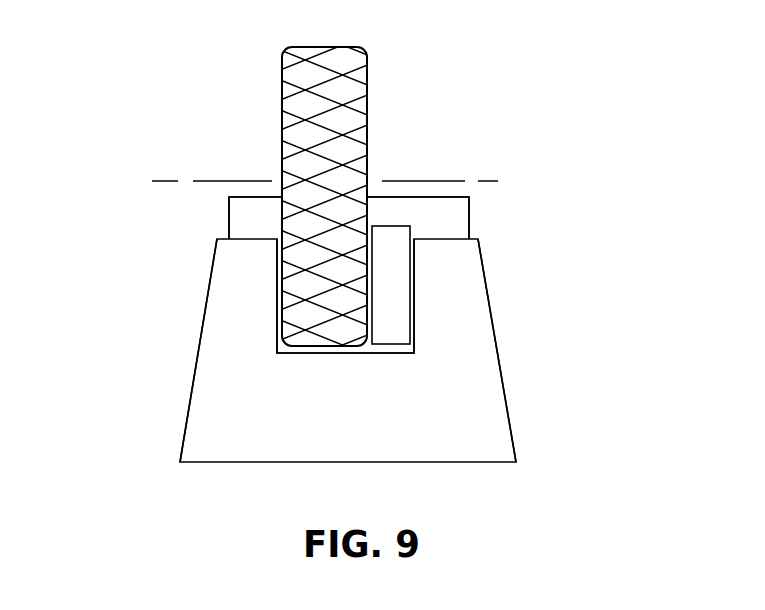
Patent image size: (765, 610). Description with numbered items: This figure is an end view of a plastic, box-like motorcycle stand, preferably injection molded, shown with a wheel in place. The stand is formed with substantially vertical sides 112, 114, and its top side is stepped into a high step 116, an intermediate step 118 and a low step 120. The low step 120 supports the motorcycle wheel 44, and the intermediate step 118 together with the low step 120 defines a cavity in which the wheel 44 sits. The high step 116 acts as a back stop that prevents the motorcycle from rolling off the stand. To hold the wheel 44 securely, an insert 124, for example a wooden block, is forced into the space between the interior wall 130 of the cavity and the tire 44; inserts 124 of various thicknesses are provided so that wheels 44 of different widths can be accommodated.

The motorcycle wheel 44 is at (342, 113).
The vertical side 112 is at (360, 442).
The vertical side 114 is at (207, 348).
The high step 116 is at (398, 197).
The intermediate step 118 is at (253, 239).
The low step 120 is at (340, 350).
The insert 124 is at (395, 320).
The interior wall 130 is at (412, 270).